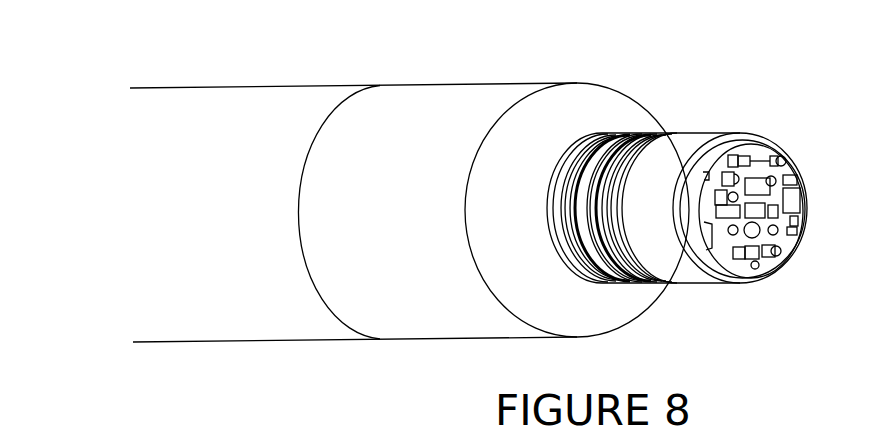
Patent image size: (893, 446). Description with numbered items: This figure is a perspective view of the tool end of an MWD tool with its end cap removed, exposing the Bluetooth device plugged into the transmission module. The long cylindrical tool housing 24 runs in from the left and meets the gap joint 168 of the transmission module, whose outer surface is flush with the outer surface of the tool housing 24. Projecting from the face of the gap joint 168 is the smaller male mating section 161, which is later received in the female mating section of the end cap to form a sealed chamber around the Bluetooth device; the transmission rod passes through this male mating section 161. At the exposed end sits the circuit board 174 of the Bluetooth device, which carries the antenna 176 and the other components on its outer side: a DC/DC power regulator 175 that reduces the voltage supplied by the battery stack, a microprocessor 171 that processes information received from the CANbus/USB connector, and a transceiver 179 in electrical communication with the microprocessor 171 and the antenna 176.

The tool housing 24 is at (215, 100).
The gap joint 168 is at (453, 100).
The male mating section 161 is at (693, 142).
The circuit board 174 is at (755, 266).
The antenna 176 is at (778, 156).
The transceiver 179 is at (793, 171).
The microprocessor 171 is at (763, 215).
The DC/DC power regulator 175 is at (765, 263).